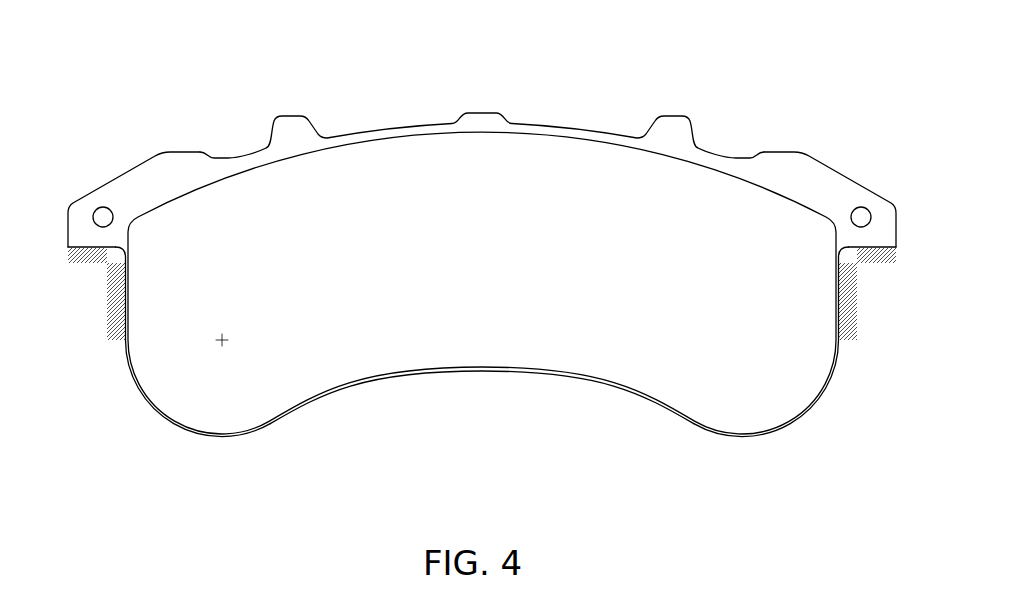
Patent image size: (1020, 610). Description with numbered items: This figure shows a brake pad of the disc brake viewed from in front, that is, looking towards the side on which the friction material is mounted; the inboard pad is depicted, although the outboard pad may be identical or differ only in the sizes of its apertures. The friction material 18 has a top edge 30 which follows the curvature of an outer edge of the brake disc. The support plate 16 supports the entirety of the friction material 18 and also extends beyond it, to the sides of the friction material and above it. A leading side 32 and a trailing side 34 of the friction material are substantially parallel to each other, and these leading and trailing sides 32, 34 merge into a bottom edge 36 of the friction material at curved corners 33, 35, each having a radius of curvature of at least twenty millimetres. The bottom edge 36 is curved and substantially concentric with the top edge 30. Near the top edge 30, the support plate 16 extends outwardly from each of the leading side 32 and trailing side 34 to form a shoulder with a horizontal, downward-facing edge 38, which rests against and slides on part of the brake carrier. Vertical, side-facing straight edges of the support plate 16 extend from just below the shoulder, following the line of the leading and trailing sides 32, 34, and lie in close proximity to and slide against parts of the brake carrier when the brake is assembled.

The support plate 16 is at (156, 184).
The friction material 18 is at (272, 373).
The top edge 30 is at (656, 150).
The leading side 32 is at (843, 307).
The curved corner 33 is at (803, 423).
The trailing side 34 is at (121, 299).
The curved corner 35 is at (161, 421).
The bottom edge 36 is at (509, 371).
The downward-facing edge 38 is at (96, 255).